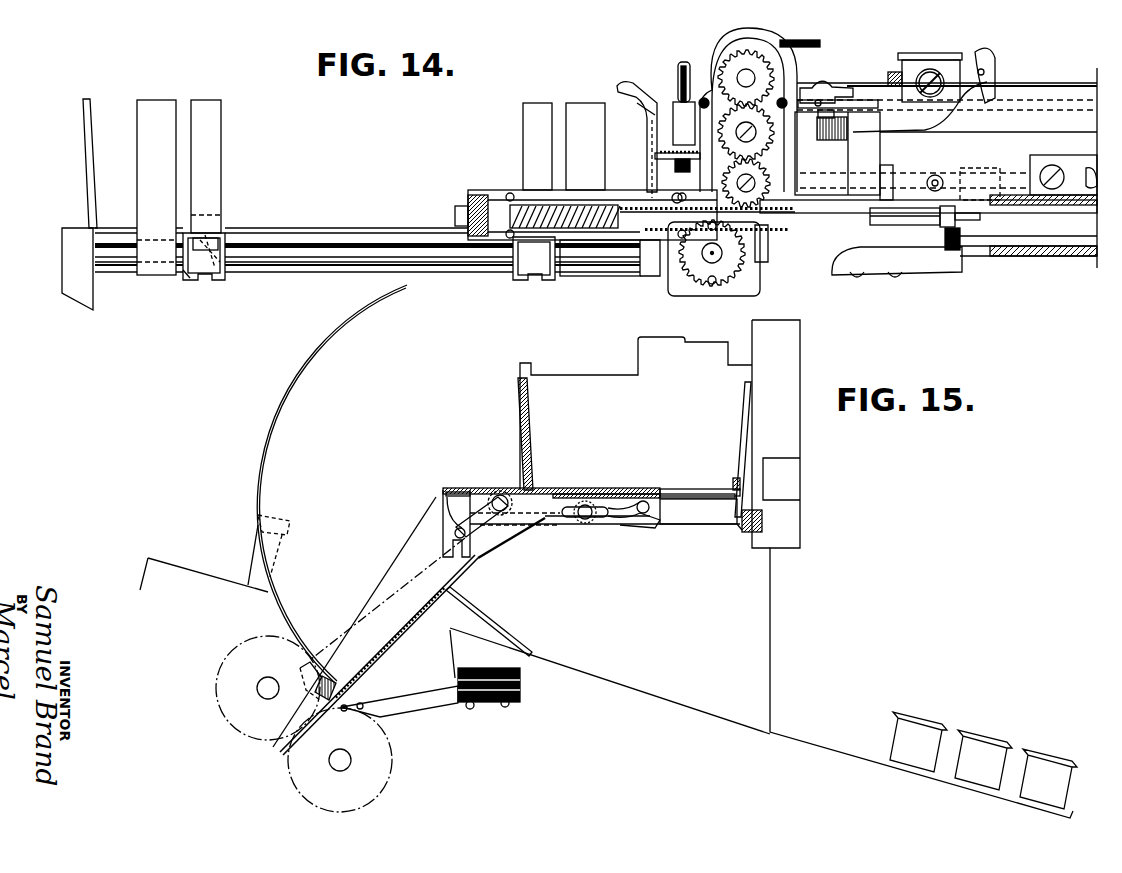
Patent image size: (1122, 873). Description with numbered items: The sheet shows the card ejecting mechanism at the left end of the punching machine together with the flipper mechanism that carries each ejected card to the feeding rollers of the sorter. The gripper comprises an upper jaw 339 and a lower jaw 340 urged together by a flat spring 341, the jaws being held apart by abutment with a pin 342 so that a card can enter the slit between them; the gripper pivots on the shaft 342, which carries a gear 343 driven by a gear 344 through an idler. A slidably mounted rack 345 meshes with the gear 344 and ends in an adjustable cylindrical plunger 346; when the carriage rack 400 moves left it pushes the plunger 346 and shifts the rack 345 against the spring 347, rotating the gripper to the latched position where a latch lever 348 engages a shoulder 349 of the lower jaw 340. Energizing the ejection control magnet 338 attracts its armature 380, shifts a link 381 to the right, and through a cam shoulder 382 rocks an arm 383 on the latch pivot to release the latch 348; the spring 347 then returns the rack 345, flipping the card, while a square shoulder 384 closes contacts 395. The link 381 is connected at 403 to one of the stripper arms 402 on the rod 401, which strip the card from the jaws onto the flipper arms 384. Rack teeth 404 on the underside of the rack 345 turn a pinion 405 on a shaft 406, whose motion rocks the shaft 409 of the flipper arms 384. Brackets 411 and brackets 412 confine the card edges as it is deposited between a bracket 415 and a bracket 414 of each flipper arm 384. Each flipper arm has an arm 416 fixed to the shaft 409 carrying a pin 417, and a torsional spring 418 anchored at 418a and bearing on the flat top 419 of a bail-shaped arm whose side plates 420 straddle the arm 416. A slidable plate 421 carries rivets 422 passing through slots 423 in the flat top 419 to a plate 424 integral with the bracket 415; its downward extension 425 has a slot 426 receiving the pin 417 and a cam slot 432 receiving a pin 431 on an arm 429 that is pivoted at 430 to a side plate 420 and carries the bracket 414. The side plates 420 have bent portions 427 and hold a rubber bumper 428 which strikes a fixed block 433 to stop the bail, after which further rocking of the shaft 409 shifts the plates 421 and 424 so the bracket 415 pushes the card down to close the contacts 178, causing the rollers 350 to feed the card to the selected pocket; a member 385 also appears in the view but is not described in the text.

In FIG. 15, the contacts 178 is at (372, 716).
In FIG. 14, the ejection control magnet 338 is at (1030, 160).
In FIG. 14, the upper jaw 339 is at (890, 76).
In FIG. 14, the lower jaw 340 is at (866, 108).
In FIG. 14, the flat spring 341 is at (820, 84).
In FIG. 14, the shaft 342 is at (846, 120).
In FIG. 14, the gear 343 is at (748, 78).
In FIG. 14, the gear 344 is at (756, 172).
In FIG. 14, the rack 345 is at (928, 212).
In FIG. 14, the cylindrical plunger 346 is at (918, 225).
In FIG. 14, the spring 347 is at (595, 226).
In FIG. 14, the latch lever 348 is at (677, 88).
In FIG. 14, the shoulder 349 is at (702, 100).
In FIG. 15, the rollers 350 is at (280, 770).
In FIG. 14, the armature 380 is at (968, 168).
In FIG. 14, the link 381 is at (884, 168).
In FIG. 14, the cam shoulder 382 is at (660, 130).
In FIG. 14, the arm 383 is at (797, 138).
In FIG. 14, the flipper arms 384 is at (203, 282).
In FIG. 15, the flipper arms 384 is at (455, 486).
In FIG. 15, the chute 385 is at (386, 650).
In FIG. 14, the contacts 395 is at (954, 262).
In FIG. 14, the rack 400 is at (1040, 236).
In FIG. 14, the rod 401 is at (668, 272).
In FIG. 14, the stripper arms 402 is at (637, 103).
In FIG. 14, the connection 403 is at (707, 219).
In FIG. 14, the rack teeth 404 is at (760, 245).
In FIG. 14, the pinion 405 is at (728, 284).
In FIG. 14, the shaft 406 is at (706, 262).
In FIG. 14, the rock shaft 409 is at (357, 246).
In FIG. 15, the rock shaft 409 is at (513, 488).
In FIG. 14, the brackets 411 is at (88, 165).
In FIG. 14, the brackets 412 is at (152, 110).
In FIG. 15, the brackets 412 is at (744, 406).
In FIG. 14, the bracket 414 is at (212, 230).
In FIG. 15, the bracket 414 is at (736, 484).
In FIG. 14, the bracket 415 is at (213, 110).
In FIG. 15, the bracket 415 is at (528, 402).
In FIG. 15, the arm 416 is at (446, 498).
In FIG. 15, the pin 417 is at (455, 533).
In FIG. 15, the torsional spring 418 is at (458, 508).
In FIG. 15, the anchor 418a is at (496, 496).
In FIG. 14, the flat top 419 is at (235, 232).
In FIG. 15, the flat top 419 is at (447, 492).
In FIG. 14, the side plates 420 is at (186, 272).
In FIG. 15, the side plates 420 is at (684, 524).
In FIG. 15, the slidable plate 421 is at (564, 520).
In FIG. 15, the rivets 422 is at (548, 520).
In FIG. 15, the slots 423 is at (582, 490).
In FIG. 15, the plate 424 is at (614, 492).
In FIG. 15, the side plate extension 425 is at (504, 555).
In FIG. 15, the slot 426 is at (473, 568).
In FIG. 15, the bent portions 427 is at (753, 533).
In FIG. 15, the rubber bumper 428 is at (316, 678).
In FIG. 15, the arm 429 is at (708, 510).
In FIG. 15, the pivot 430 is at (590, 520).
In FIG. 15, the pin 431 is at (652, 520).
In FIG. 15, the cam slot 432 is at (293, 386).
In FIG. 15, the fixed block 433 is at (318, 692).